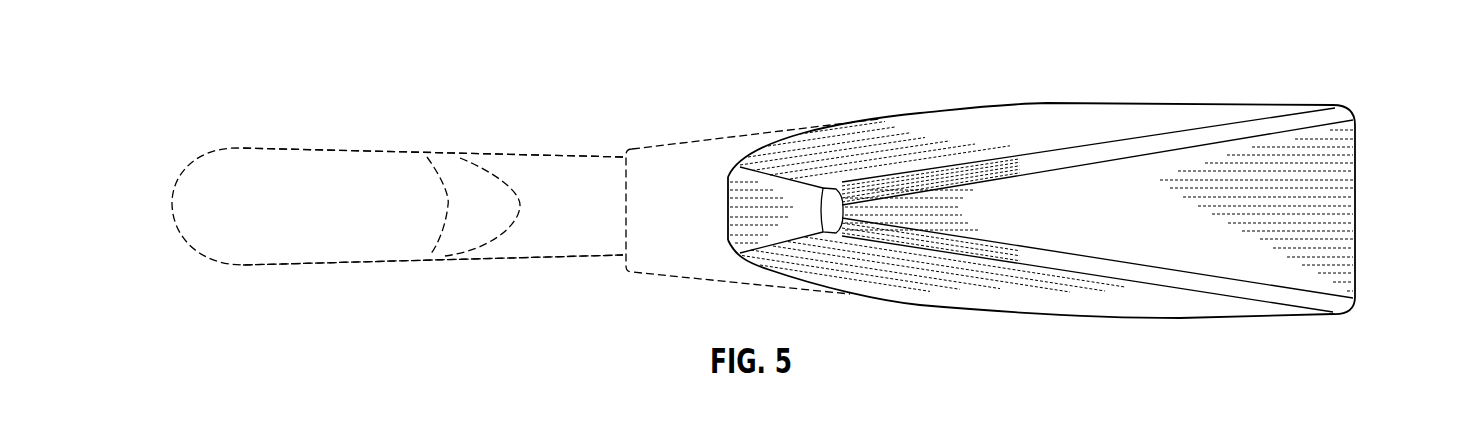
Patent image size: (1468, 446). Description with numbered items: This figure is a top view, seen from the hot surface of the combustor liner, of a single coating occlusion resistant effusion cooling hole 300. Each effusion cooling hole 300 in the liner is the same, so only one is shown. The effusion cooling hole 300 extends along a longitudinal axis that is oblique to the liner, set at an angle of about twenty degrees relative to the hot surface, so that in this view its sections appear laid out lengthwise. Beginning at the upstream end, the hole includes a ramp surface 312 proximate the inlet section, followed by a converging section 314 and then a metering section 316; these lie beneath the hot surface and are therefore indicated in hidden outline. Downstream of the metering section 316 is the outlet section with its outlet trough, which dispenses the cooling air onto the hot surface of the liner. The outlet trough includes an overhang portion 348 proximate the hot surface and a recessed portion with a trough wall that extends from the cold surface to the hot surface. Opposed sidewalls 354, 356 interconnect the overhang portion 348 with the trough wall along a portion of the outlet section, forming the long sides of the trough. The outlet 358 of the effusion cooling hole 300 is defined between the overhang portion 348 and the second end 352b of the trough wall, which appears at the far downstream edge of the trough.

The effusion cooling hole 300 is at (1090, 196).
The ramp surface 312 is at (250, 143).
The converging section 314 is at (427, 157).
The metering section 316 is at (570, 175).
The overhang portion 348 is at (681, 180).
The second end 352b is at (1355, 207).
The sidewall 354 is at (1068, 318).
The sidewall 356 is at (947, 114).
The outlet 358 is at (1325, 160).